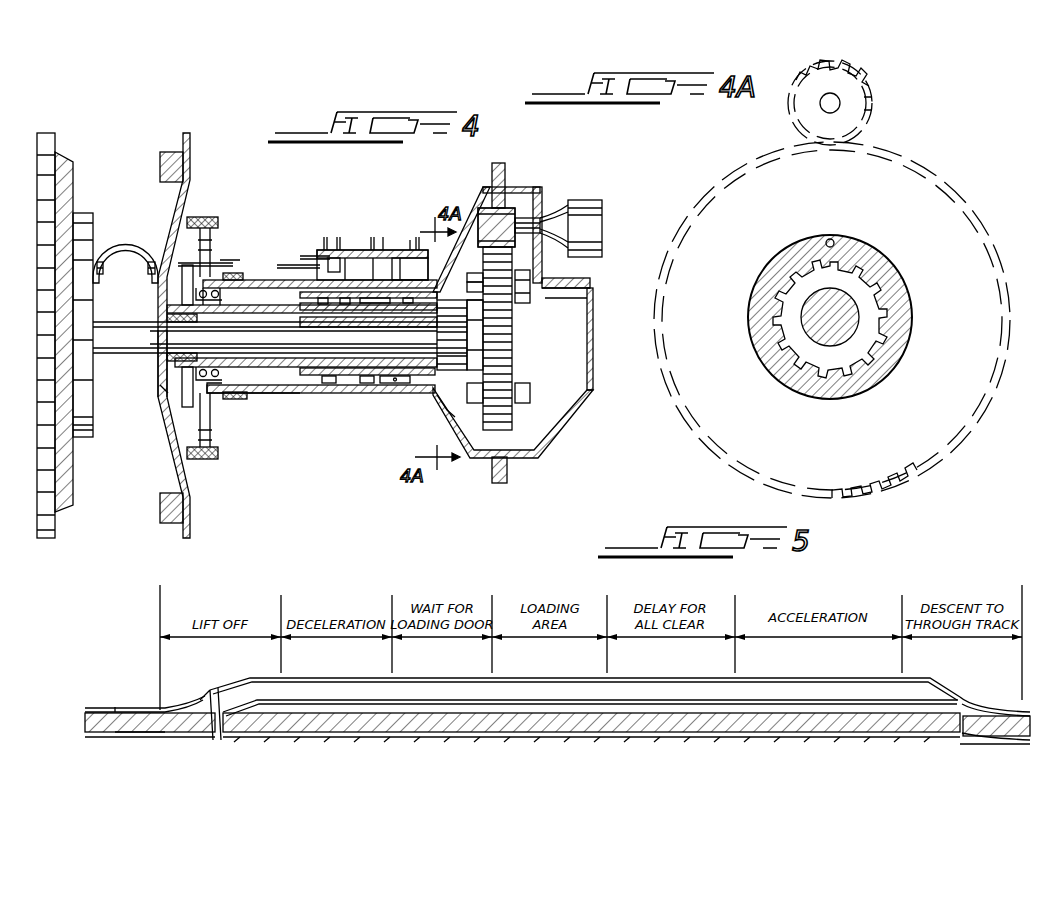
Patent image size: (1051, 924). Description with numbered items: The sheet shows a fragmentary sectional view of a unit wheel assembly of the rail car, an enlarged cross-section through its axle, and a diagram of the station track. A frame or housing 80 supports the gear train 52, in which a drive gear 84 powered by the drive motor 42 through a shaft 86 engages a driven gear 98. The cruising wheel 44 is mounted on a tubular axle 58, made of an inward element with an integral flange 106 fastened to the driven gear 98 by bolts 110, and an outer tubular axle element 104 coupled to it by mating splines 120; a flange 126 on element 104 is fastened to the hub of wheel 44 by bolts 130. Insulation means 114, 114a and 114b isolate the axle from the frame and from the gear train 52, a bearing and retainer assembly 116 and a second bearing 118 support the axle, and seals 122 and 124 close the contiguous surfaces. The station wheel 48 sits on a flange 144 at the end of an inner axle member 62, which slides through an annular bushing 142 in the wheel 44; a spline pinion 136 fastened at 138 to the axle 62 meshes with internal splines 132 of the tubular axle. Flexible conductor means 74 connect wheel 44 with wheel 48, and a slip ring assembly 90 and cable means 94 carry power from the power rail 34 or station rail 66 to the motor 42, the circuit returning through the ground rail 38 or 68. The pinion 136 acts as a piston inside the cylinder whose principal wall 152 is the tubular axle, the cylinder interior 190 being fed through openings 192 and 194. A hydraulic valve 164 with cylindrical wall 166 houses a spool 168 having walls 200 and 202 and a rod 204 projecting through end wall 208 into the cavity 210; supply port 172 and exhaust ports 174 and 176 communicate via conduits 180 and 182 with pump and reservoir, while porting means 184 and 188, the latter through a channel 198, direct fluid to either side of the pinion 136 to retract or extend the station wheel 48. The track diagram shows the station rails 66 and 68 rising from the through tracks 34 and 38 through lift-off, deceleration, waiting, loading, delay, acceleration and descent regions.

In FIG. 5, the power rail 34 is at (425, 716).
In FIG. 5, the ground rail 38 is at (505, 736).
In FIG. 4, the drive motor 42 is at (588, 207).
In FIG. 4, the cruising wheel 44 is at (176, 511).
In FIG. 4, the station wheel 48 is at (62, 505).
In FIG. 4, the gear train 52 is at (545, 438).
In FIG. 4, the tubular axle 58 is at (287, 391).
In FIG. 4, the inner axle member 62 is at (150, 355).
In FIG. 4A, the inner axle member 62 is at (838, 305).
In FIG. 5, the station rail 66 is at (372, 678).
In FIG. 5, the station ground rail 68 is at (345, 706).
In FIG. 4, the flexible conductor means 74 is at (127, 244).
In FIG. 4, the housing 80 is at (316, 408).
In FIG. 4, the drive gear 84 is at (500, 200).
In FIG. 4A, the drive gear 84 is at (880, 102).
In FIG. 4, the shaft 86 is at (527, 220).
In FIG. 4A, the shaft 86 is at (838, 104).
In FIG. 4, the slip ring assembly 90 is at (212, 240).
In FIG. 4, the cable means 94 is at (216, 262).
In FIG. 4, the driven gear 98 is at (490, 430).
In FIG. 4A, the driven gear 98 is at (918, 183).
In FIG. 4, the tubular axle element 104 is at (325, 372).
In FIG. 4, the flange 106 is at (470, 410).
In FIG. 4, the bolts 110 is at (470, 275).
In FIG. 4, the insulation means 114 is at (520, 280).
In FIG. 4, the insulation means 114a is at (236, 400).
In FIG. 4, the insulation means 114b is at (505, 480).
In FIG. 4, the bearing and retainer assembly 116 is at (198, 293).
In FIG. 4, the second bearing 118 is at (416, 390).
In FIG. 4, the mating splines 120 is at (380, 380).
In FIG. 4, the seal 122 is at (345, 377).
In FIG. 4, the seal 124 is at (322, 357).
In FIG. 4, the flange 126 is at (147, 272).
In FIG. 4, the bolts 130 is at (158, 400).
In FIG. 4, the internal splines 132 is at (468, 287).
In FIG. 4A, the internal splines 132 is at (880, 316).
In FIG. 4, the spline pinion 136 is at (470, 332).
In FIG. 4A, the spline pinion 136 is at (885, 337).
In FIG. 4, the fastening 138 is at (485, 346).
In FIG. 4, the annular bushing 142 is at (170, 322).
In FIG. 4, the flange 144 is at (82, 427).
In FIG. 4, the principal wall 152 is at (447, 418).
In FIG. 4, the hydraulic valve 164 is at (365, 264).
In FIG. 4, the cylindrical wall 166 is at (356, 250).
In FIG. 4, the spool 168 is at (376, 258).
In FIG. 4, the pressurized fluid supply port 172 is at (398, 250).
In FIG. 4, the exhaust port 174 is at (323, 244).
In FIG. 4, the exhaust port 176 is at (496, 227).
In FIG. 4, the conduit 180 is at (338, 244).
In FIG. 4, the conduit 182 is at (420, 244).
In FIG. 4, the porting means 184 is at (322, 286).
In FIG. 4, the porting means 188 is at (396, 311).
In FIG. 4, the cylinder interior 190 is at (378, 312).
In FIG. 4, the opening 192 is at (345, 313).
In FIG. 4, the opening 194 is at (548, 300).
In FIG. 4A, the channel 198 is at (833, 240).
In FIG. 4, the radially extending wall 200 is at (334, 256).
In FIG. 4, the radially extending wall 202 is at (410, 269).
In FIG. 4, the rod 204 is at (300, 258).
In FIG. 4, the end wall 208 is at (300, 267).
In FIG. 4, the cylindrical cavity 210 is at (412, 250).